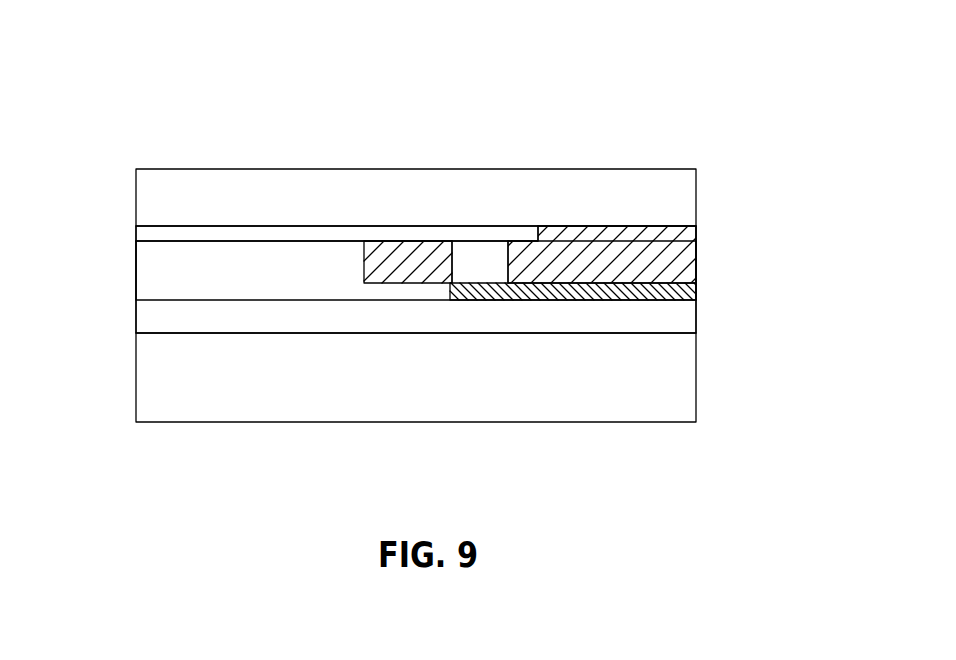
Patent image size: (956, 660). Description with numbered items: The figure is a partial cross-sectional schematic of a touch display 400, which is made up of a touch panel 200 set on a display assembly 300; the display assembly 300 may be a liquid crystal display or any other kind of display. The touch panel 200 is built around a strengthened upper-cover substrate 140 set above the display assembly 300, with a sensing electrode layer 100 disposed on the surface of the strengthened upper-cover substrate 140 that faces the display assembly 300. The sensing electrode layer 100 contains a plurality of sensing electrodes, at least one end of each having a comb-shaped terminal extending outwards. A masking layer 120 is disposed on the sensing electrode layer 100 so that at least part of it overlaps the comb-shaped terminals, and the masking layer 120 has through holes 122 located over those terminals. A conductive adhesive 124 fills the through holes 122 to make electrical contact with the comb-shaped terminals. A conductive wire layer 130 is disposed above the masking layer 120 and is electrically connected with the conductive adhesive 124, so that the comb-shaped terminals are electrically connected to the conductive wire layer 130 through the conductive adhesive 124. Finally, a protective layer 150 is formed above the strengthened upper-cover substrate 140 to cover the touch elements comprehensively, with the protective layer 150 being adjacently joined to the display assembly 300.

The sensing electrode layer 100 is at (136, 231).
The masking layer 120 is at (676, 259).
The through holes 122 is at (452, 255).
The conductive adhesive 124 is at (490, 263).
The conductive wire layer 130 is at (685, 290).
The strengthened upper-cover substrate 140 is at (673, 203).
The protective layer 150 is at (157, 293).
The touch panel 200 is at (795, 163).
The display assembly 300 is at (673, 383).
The touch display 400 is at (722, 77).